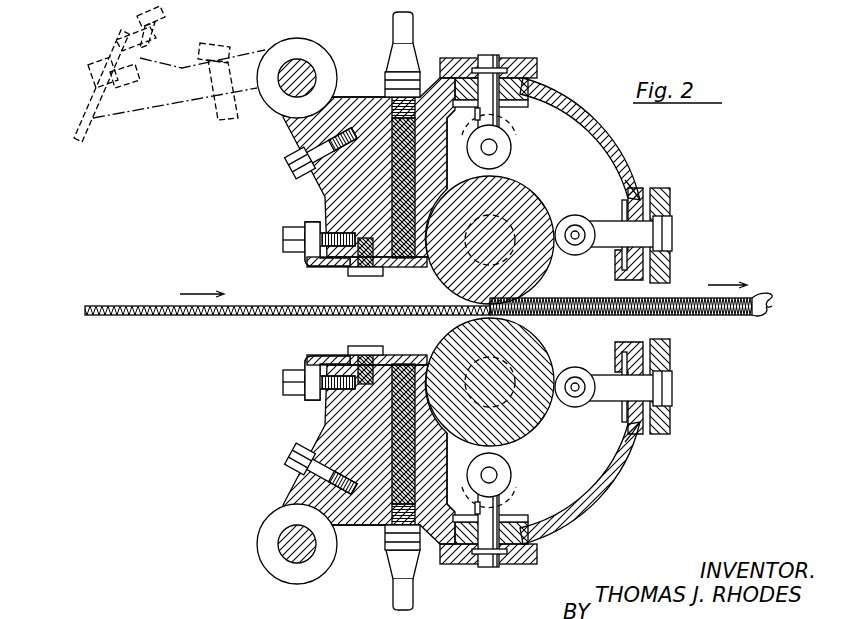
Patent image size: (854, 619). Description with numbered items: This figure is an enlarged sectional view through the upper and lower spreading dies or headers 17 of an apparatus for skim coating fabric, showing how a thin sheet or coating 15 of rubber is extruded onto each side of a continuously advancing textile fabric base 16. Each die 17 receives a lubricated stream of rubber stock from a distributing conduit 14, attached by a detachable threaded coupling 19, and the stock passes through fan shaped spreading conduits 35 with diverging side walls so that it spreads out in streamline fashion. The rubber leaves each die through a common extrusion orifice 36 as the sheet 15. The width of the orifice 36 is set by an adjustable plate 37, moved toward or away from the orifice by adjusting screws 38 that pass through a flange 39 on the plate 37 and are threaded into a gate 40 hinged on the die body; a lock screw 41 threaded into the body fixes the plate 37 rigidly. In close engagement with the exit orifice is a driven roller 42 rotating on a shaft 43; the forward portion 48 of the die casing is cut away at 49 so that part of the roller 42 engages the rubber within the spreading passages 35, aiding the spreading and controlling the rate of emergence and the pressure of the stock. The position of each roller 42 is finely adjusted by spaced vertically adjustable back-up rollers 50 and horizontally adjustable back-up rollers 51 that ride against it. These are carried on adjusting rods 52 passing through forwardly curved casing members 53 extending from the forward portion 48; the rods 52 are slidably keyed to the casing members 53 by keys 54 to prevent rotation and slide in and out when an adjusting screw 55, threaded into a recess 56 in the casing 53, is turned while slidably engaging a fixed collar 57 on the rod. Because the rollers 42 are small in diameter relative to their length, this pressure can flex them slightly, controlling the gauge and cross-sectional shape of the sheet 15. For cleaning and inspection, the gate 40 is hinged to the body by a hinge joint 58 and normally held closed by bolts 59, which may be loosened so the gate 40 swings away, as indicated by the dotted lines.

The distributing conduits 14 is at (410, 15).
The thin sheet or coating 15 is at (773, 296).
The textile fabric base 16 is at (144, 316).
The spreading die or header 17 is at (358, 93).
The threaded coupling 19 is at (392, 62).
The fan shaped spreading conduits 35 is at (345, 145).
The extrusion orifice 36 is at (427, 265).
The adjustable plate 37 is at (112, 50).
The adjusting screws 38 is at (285, 232).
The flange 39 is at (308, 222).
The gate 40 is at (143, 107).
The lock screw 41 is at (348, 272).
The driven roller 42 is at (527, 280).
The shaft 43 is at (537, 212).
The forward portion of the casing 48 is at (440, 136).
The cut away 49 is at (441, 311).
The vertically adjustable back-up rollers 50 is at (512, 150).
The horizontally adjustable back-up rollers 51 is at (597, 218).
The adjusting rods 52 is at (493, 55).
The forwardly curved casing members 53 is at (587, 120).
The keys 54 is at (507, 127).
The adjusting screw 55 is at (537, 63).
The recess 56 is at (640, 175).
The fixed collar 57 is at (522, 60).
The hinge joint 58 is at (301, 39).
The bolts 59 is at (303, 170).